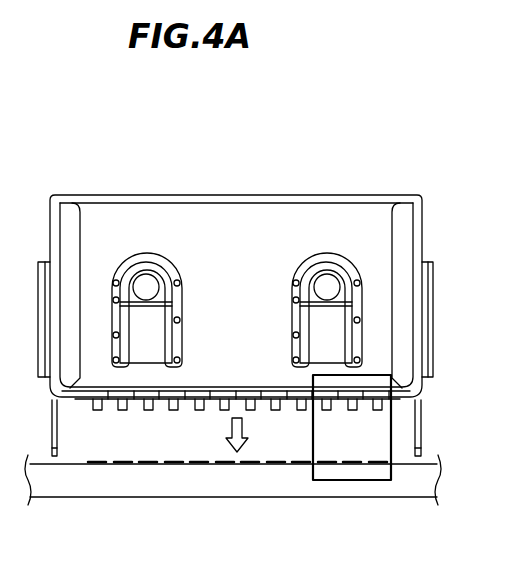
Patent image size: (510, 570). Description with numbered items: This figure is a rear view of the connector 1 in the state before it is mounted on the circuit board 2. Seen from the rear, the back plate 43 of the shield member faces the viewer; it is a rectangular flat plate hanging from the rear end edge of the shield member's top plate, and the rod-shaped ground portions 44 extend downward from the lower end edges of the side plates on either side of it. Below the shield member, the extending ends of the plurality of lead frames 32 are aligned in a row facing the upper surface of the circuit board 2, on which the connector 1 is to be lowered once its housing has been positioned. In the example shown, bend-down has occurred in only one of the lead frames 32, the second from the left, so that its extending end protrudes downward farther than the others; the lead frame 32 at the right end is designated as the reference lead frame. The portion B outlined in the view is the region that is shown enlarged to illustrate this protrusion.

The connector 1 is at (356, 150).
The back plate 43 is at (236, 238).
The lead frame 32 is at (93, 410).
The ground portion 44 is at (55, 466).
The circuit board 2 is at (280, 498).
The portion B is at (362, 483).